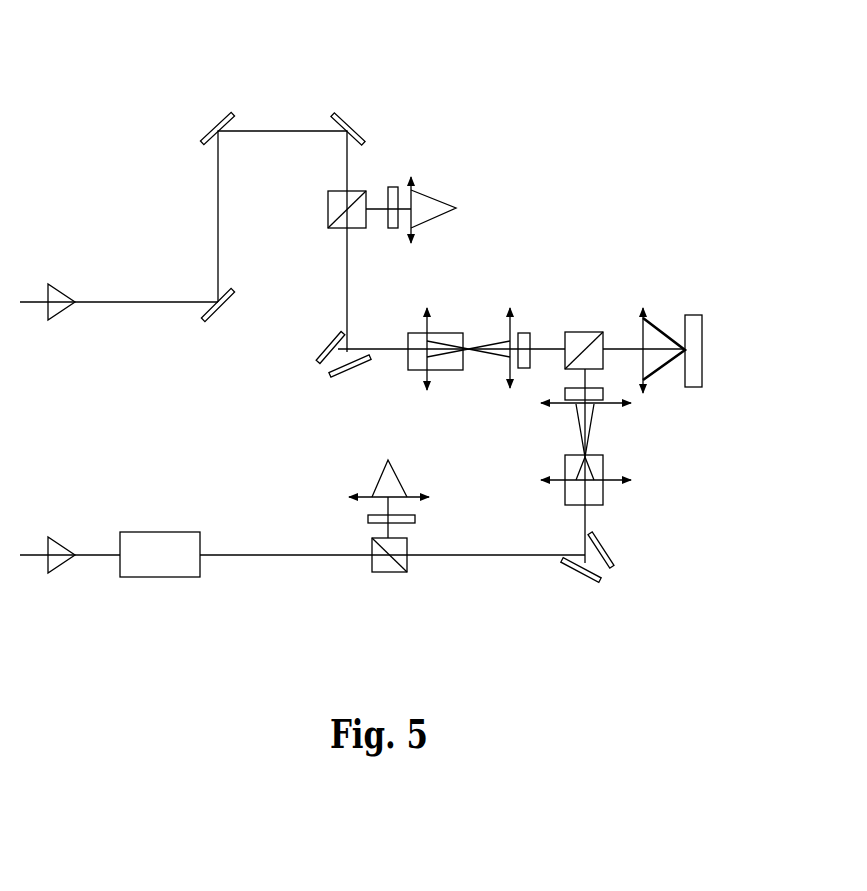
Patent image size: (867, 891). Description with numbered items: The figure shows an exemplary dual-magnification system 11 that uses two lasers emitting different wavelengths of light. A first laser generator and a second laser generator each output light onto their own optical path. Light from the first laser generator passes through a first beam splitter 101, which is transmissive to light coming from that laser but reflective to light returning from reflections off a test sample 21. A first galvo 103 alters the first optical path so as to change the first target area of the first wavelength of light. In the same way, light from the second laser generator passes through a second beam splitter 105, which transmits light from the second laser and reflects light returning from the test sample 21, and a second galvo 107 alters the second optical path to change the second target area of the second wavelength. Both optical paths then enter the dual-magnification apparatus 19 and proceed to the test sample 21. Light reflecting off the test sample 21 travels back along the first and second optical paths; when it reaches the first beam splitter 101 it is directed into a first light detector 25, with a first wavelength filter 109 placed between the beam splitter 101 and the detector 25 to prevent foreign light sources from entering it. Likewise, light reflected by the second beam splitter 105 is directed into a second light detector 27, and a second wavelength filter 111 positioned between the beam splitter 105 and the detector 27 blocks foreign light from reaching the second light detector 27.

The dual-magnification system 11 is at (94, 80).
The first beam splitter 101 is at (328, 205).
The first wavelength filter 109 is at (391, 230).
The first light detector 25 is at (455, 205).
The first galvo 103 is at (314, 381).
The dual-magnification apparatus 19 is at (604, 357).
The test sample 21 is at (702, 353).
The second beam splitter 105 is at (386, 573).
The second wavelength filter 111 is at (368, 518).
The second light detector 27 is at (383, 463).
The second galvo 107 is at (607, 583).